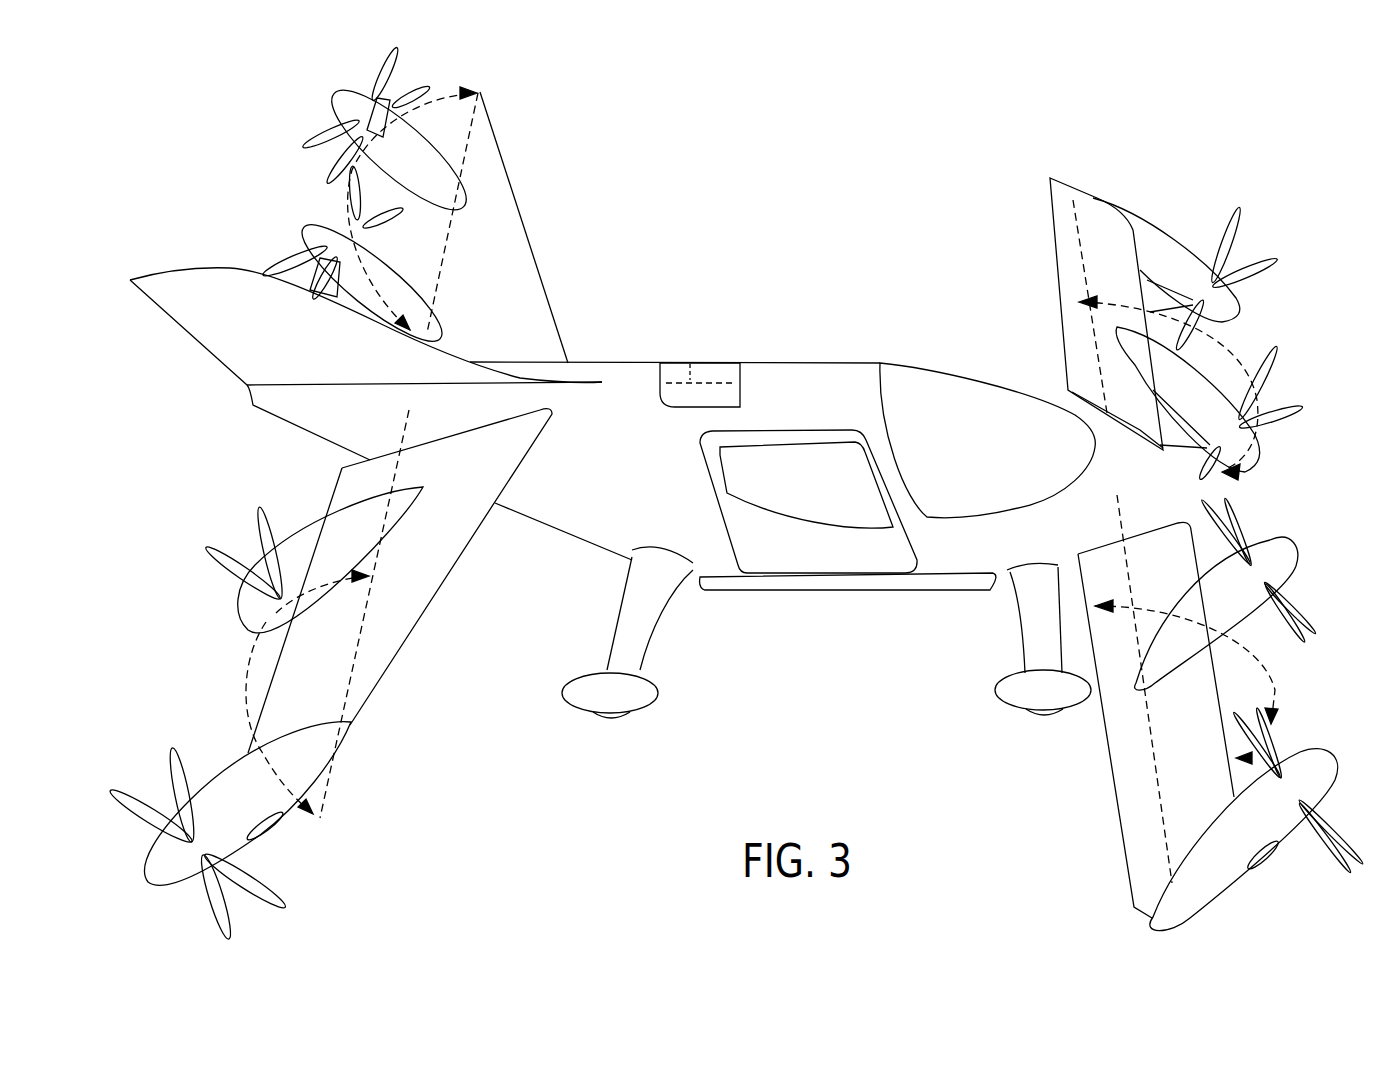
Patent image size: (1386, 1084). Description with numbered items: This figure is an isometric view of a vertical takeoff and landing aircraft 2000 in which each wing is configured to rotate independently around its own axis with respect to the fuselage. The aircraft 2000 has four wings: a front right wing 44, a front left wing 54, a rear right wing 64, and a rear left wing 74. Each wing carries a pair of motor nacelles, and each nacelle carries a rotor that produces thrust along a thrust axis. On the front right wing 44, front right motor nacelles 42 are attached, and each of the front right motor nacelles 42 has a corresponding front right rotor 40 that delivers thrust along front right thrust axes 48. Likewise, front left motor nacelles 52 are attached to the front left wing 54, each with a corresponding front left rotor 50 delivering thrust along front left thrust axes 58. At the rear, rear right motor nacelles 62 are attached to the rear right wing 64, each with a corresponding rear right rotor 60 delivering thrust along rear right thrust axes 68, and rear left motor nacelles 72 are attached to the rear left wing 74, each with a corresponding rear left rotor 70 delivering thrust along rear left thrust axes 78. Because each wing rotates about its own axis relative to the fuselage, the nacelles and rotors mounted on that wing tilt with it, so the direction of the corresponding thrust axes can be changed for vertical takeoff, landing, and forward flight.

The vertical takeoff and landing aircraft 2000 is at (1186, 141).
The front right rotor 40 is at (1235, 503).
The front right motor nacelles 42 is at (1255, 618).
The front right wing 44 is at (1119, 778).
The front right thrust axes 48 is at (1320, 517).
The front left rotor 50 is at (1283, 262).
The front left motor nacelles 52 is at (1193, 260).
The front left wing 54 is at (1068, 328).
The front left thrust axes 58 is at (1256, 328).
The rear right rotor 60 is at (257, 512).
The rear right motor nacelles 62 is at (407, 494).
The rear right wing 64 is at (416, 622).
The rear right thrust axes 68 is at (234, 632).
The rear left rotor 70 is at (377, 72).
The rear left motor nacelles 72 is at (470, 205).
The rear left wing 74 is at (540, 337).
The rear left thrust axes 78 is at (313, 60).